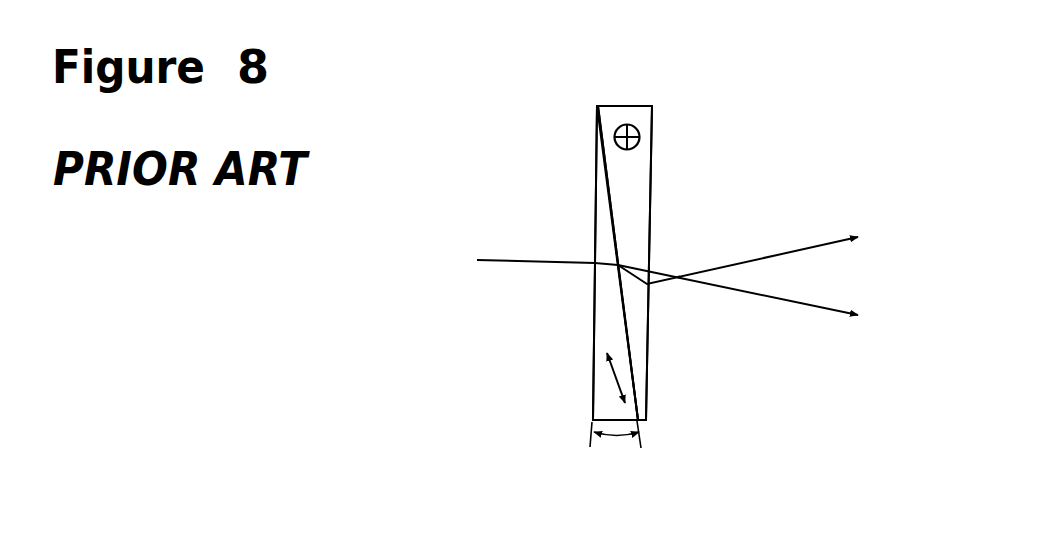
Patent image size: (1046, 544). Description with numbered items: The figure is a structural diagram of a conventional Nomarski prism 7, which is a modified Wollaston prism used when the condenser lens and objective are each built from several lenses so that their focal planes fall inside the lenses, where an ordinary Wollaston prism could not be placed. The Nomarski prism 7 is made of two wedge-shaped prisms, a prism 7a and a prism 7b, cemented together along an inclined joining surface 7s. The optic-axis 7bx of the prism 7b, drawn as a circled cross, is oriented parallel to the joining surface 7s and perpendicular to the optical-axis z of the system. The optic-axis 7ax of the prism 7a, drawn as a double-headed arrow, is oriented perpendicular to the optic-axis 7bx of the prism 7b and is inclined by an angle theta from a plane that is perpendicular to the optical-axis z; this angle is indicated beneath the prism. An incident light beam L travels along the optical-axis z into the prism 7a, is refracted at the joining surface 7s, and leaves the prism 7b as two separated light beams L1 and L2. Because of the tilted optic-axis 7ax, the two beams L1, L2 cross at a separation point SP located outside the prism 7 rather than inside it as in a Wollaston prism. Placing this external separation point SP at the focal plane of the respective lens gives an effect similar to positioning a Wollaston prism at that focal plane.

The Nomarski prism 7 is at (585, 85).
The joining surface 7s is at (613, 221).
The prism 7a is at (606, 320).
The optic-axis 7ax is at (614, 379).
The prism 7b is at (642, 185).
The optic-axis 7bx is at (637, 128).
The light beam L is at (547, 243).
The light beam L1 is at (757, 252).
The light beam L2 is at (757, 298).
The separation point SP is at (681, 278).
The optical-axis z is at (497, 267).